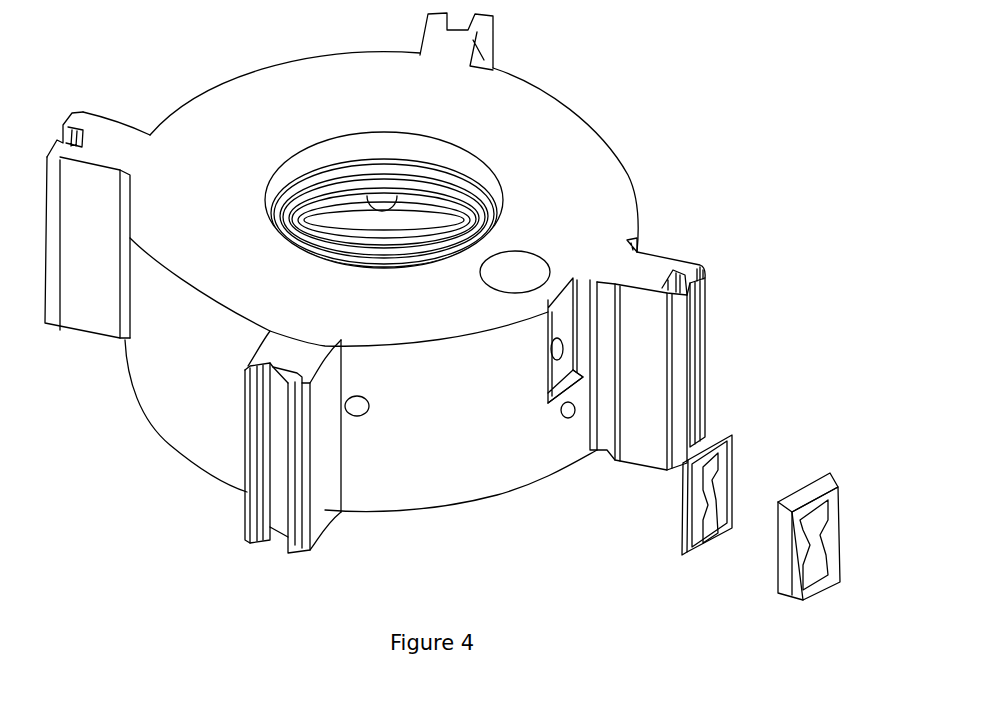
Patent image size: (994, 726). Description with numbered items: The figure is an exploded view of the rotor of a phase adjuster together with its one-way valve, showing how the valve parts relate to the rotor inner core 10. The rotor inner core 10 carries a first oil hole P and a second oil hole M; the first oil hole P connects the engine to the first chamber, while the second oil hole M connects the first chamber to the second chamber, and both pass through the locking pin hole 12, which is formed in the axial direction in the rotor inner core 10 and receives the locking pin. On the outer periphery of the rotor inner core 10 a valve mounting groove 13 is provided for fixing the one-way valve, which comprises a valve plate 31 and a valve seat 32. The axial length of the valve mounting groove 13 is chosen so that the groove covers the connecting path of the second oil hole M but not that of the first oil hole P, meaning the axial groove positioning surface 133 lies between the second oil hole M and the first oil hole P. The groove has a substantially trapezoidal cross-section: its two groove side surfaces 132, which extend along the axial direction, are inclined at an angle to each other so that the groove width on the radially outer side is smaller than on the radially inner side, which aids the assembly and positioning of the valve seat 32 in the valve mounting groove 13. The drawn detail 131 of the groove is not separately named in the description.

The rotor inner core 10 is at (527, 118).
The locking pin hole 12 is at (520, 277).
The valve mounting groove 13 is at (552, 291).
The top plate of mounting tab 131 is at (560, 293).
The groove side surfaces 132 is at (586, 314).
The axial groove positioning surface 133 is at (552, 388).
The second oil hole M is at (552, 350).
The first oil hole P is at (565, 412).
The valve plate 31 is at (713, 478).
The valve seat 32 is at (817, 510).